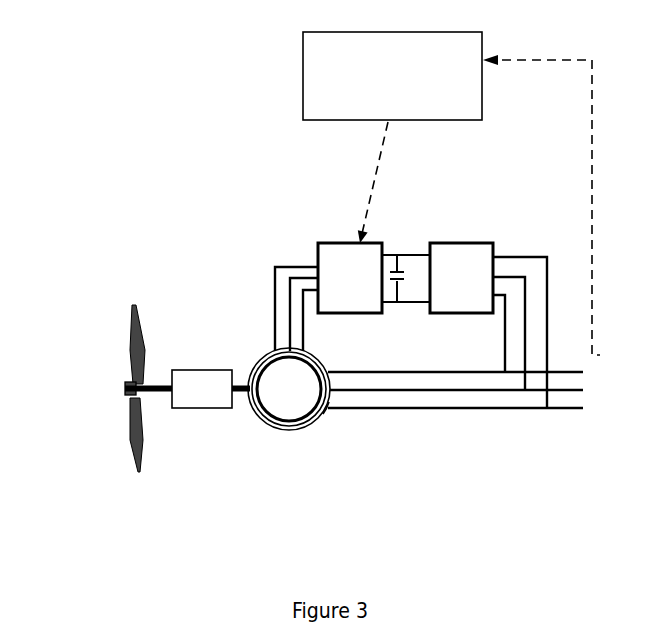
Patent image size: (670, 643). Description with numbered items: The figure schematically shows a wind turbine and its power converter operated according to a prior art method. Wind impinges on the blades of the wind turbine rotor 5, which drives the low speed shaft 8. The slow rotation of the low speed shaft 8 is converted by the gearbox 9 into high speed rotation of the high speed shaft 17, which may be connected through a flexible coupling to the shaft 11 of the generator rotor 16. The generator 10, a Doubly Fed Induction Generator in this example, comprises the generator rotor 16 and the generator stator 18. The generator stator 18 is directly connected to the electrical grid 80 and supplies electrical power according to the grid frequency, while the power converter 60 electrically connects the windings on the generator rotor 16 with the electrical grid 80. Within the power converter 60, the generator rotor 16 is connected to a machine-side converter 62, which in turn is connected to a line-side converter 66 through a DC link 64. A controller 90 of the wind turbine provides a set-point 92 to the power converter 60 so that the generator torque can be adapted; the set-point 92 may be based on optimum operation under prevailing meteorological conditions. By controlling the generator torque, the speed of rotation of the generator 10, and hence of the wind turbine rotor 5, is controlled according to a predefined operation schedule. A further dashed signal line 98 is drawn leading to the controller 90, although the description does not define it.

The wind turbine rotor 5 is at (133, 405).
The low speed shaft 8 is at (163, 394).
The gearbox 9 is at (190, 370).
The generator 10 is at (332, 434).
The shaft of the generator rotor 11 is at (262, 356).
The generator rotor 16 is at (288, 425).
The high speed shaft 17 is at (238, 394).
The generator stator 18 is at (325, 412).
The power converter 60 is at (411, 350).
The machine-side converter 62 is at (318, 243).
The DC link 64 is at (410, 255).
The line-side converter 66 is at (480, 243).
The electrical grid 80 is at (477, 385).
The controller 90 is at (483, 42).
The set-point 92 is at (370, 182).
The feedback signal line 98 is at (556, 205).